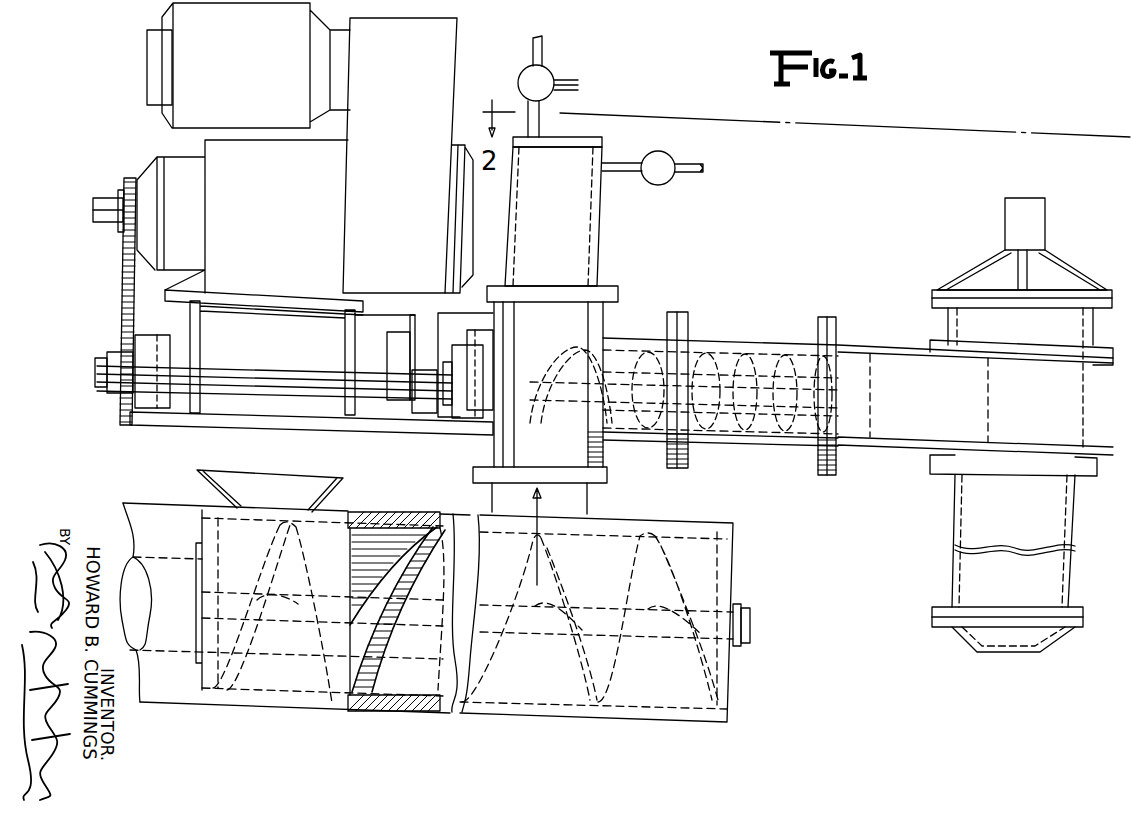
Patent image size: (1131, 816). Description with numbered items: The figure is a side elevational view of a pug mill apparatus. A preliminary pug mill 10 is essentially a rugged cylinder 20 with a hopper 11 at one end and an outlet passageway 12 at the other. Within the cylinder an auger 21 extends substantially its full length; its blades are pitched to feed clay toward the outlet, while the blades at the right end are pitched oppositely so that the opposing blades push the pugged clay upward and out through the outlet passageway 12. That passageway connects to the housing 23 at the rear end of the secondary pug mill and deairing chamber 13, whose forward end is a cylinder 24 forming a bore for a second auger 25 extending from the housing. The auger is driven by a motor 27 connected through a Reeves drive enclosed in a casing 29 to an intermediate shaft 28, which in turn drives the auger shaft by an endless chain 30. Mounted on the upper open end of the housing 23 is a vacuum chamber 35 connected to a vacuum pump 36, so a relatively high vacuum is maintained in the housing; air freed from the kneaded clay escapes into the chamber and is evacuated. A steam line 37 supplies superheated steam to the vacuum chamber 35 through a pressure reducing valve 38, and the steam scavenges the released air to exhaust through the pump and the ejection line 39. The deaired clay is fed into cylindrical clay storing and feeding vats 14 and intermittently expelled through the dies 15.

The preliminary pug mill 10 is at (293, 715).
The hopper 11 is at (270, 488).
The outlet passageway 12 is at (590, 508).
The secondary pug mill and deairing chamber 13 is at (700, 337).
The cylindrical clay storing and feeding vat 14 is at (1064, 256).
The die 15 is at (1017, 650).
The cylinder 20 is at (373, 512).
The auger 21 is at (384, 700).
The housing 23 is at (572, 318).
The cylinder 24 is at (772, 346).
The second auger 25 is at (732, 448).
The motor 27 is at (187, 57).
The intermediate shaft 28 is at (105, 197).
The casing 29 is at (457, 40).
The endless chain 30 is at (119, 291).
The vacuum chamber 35 is at (601, 245).
The vacuum pump 36 is at (665, 152).
The steam line 37 is at (547, 47).
The pressure reducing valve 38 is at (520, 71).
The ejection line 39 is at (688, 177).